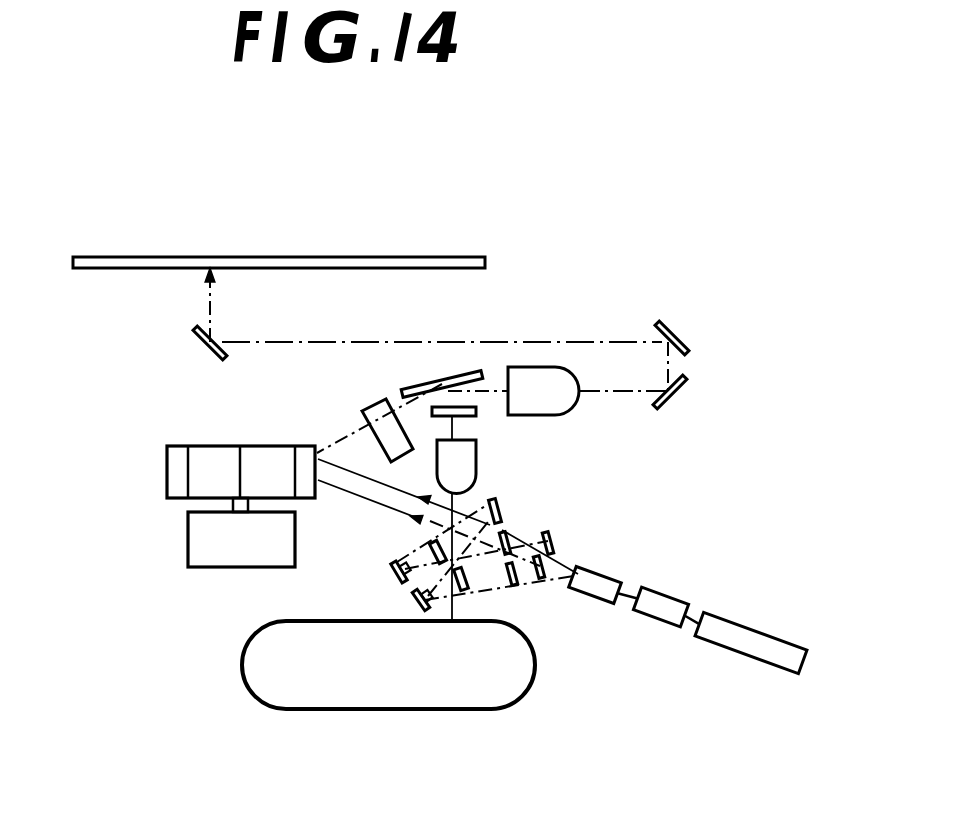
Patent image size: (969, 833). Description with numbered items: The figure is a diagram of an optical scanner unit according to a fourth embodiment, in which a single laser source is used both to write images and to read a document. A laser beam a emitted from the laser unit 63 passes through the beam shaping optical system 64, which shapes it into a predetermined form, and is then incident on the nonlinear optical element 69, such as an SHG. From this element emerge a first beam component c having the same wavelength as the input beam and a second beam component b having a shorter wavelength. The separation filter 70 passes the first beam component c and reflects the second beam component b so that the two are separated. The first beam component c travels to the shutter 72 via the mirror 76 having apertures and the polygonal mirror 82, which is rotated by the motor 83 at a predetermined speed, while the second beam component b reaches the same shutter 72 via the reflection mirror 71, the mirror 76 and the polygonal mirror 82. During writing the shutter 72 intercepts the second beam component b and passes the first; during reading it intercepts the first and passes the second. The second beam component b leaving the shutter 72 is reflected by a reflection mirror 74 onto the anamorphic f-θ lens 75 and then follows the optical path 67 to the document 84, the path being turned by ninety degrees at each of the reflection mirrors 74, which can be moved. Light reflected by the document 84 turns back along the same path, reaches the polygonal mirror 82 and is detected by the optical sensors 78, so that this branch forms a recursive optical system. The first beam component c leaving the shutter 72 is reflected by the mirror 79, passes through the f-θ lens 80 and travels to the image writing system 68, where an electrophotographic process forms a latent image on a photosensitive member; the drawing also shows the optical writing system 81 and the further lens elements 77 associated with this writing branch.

The laser unit 63 is at (802, 666).
The beam shaping optical system 64 is at (667, 630).
The optical path 67 is at (561, 322).
The image writing system 68 is at (282, 703).
The nonlinear optical element 69 is at (600, 606).
The separation filter 70 is at (518, 587).
The reflection mirror 71 is at (543, 580).
The shutter 72 is at (362, 411).
The reflection mirror 74 is at (205, 343).
The f-θ lens 75 is at (587, 424).
The mirror having apertures 76 is at (494, 505).
The lens 77 is at (441, 566).
The optical sensors 78 is at (415, 605).
The mirror 79 is at (480, 413).
The f-θ lens 80 is at (477, 462).
The optical writing system 81 is at (405, 711).
The polygonal mirror 82 is at (167, 462).
The motor 83 is at (195, 547).
The document 84 is at (310, 257).
The laser beam a is at (703, 614).
The second beam component b is at (506, 342).
The first beam component c is at (355, 493).